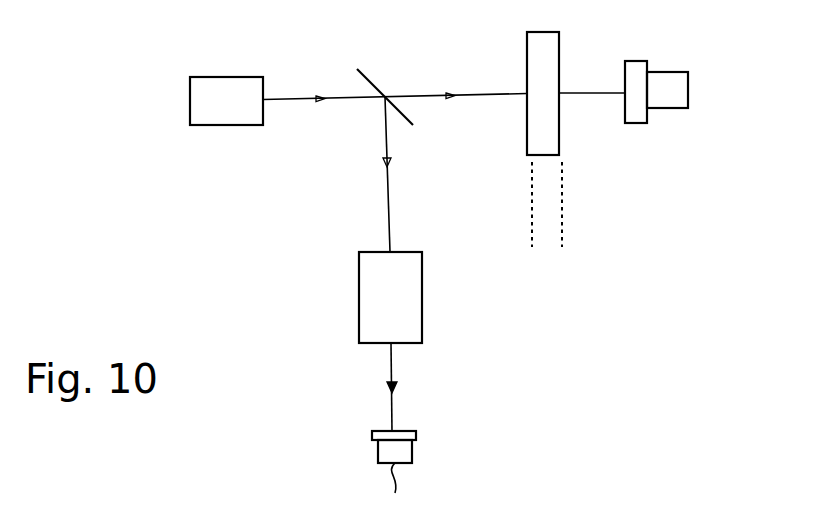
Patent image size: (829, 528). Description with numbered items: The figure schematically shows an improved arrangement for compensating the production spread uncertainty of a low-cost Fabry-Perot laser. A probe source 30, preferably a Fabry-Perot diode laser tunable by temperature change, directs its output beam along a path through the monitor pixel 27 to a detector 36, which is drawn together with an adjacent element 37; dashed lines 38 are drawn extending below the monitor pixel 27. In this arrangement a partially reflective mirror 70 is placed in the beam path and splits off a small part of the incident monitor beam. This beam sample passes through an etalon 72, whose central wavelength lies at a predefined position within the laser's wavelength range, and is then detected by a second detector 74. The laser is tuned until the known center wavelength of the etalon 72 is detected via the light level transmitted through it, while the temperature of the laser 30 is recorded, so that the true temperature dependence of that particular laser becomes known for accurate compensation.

The probe source 30 is at (229, 77).
The partially reflective mirror 70 is at (372, 81).
The monitor pixel 27 is at (540, 32).
The plate position indication 38 is at (572, 206).
The detector 36 is at (640, 61).
The detector lead / connector 37 is at (689, 89).
The etalon 72 is at (422, 290).
The second detector 74 is at (418, 437).